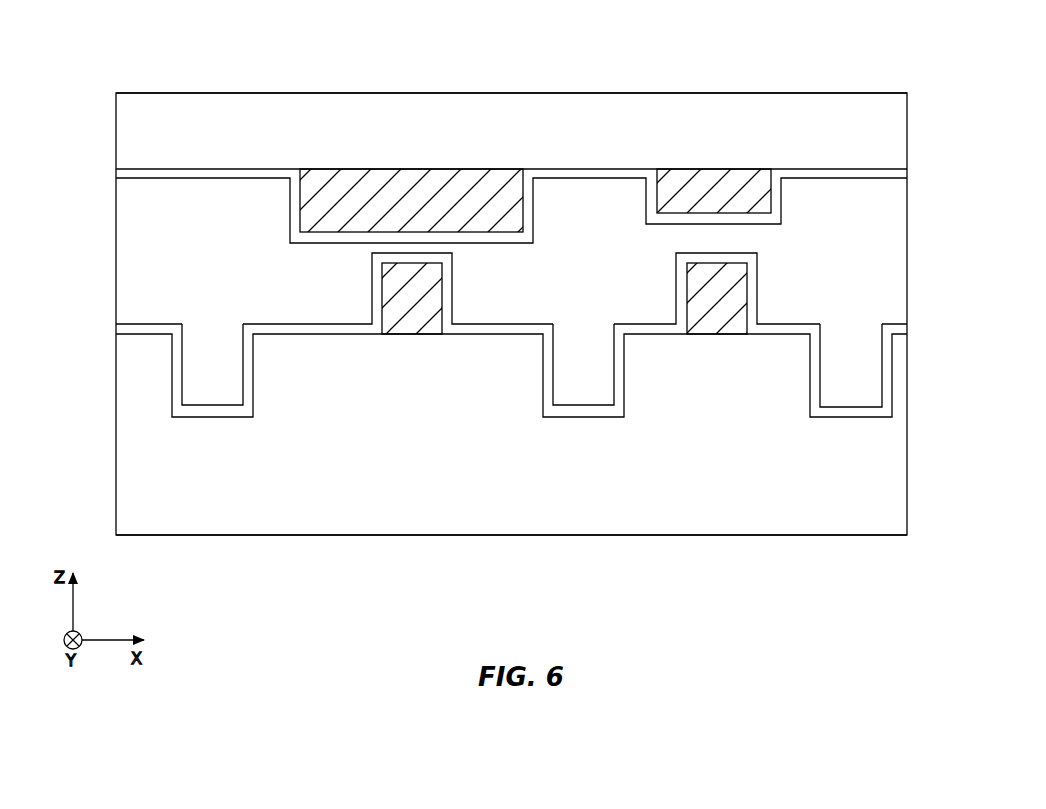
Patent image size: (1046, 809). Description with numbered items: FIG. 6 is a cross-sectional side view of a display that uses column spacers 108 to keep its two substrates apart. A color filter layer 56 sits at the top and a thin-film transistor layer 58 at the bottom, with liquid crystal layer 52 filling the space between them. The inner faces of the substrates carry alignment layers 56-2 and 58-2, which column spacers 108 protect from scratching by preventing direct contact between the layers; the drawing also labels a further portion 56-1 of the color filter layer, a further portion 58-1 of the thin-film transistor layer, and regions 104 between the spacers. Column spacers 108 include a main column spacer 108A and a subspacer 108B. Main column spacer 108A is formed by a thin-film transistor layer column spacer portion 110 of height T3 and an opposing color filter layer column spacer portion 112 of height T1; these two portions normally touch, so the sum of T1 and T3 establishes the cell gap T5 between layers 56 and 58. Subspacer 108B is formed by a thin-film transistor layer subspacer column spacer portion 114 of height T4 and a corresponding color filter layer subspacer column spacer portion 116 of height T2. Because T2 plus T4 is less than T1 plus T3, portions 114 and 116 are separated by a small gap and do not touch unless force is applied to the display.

The liquid crystal layer 52 is at (898, 246).
The color filter layer 56 is at (921, 93).
The upper layer 56-1 is at (128, 126).
The alignment layer 56-2 is at (128, 173).
The thin-film transistor layer 58 is at (921, 324).
The lower bulk layer 58-1 is at (128, 466).
The alignment layer 58-2 is at (128, 328).
The trenches 104 is at (211, 322).
The column spacers 108 is at (483, 254).
The main column spacer 108A is at (492, 555).
The subspacer 108B is at (797, 555).
The thin-film transistor layer column spacer portion 110 is at (390, 293).
The color filter layer column spacer portion 112 is at (305, 199).
The thin-film transistor layer subspacer column spacer portion 114 is at (740, 298).
The color filter layer subspacer column spacer portion 116 is at (662, 190).
The height of color filter layer column spacer portion T1 is at (412, 171).
The height of color filter layer subspacer column spacer portion T2 is at (713, 171).
The height of thin-film transistor layer column spacer portion T3 is at (411, 265).
The height of thin-film transistor layer subspacer column spacer portion T4 is at (717, 265).
The cell gap T5 is at (145, 181).